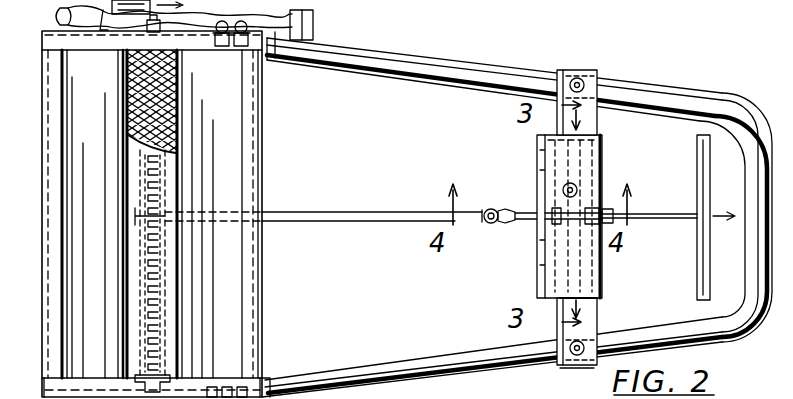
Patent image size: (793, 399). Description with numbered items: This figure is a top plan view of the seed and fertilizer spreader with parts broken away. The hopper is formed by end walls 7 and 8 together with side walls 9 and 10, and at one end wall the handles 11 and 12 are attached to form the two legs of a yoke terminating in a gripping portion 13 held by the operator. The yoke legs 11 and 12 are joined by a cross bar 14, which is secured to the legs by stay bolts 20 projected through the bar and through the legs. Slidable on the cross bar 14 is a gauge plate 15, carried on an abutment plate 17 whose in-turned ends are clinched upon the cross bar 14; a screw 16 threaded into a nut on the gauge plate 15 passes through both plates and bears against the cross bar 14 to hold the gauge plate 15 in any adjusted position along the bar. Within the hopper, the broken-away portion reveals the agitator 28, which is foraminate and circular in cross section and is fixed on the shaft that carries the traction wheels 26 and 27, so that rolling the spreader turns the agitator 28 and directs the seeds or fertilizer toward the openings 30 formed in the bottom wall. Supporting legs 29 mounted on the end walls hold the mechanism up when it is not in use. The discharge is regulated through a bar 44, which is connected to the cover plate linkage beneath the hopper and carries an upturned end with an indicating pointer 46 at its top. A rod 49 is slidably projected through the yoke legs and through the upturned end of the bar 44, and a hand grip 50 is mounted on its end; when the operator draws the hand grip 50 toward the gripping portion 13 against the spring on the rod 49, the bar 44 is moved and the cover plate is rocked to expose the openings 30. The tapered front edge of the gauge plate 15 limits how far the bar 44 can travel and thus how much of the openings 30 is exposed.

The end wall 7 is at (91, 385).
The end wall 8 is at (139, 16).
The side wall 9 is at (250, 268).
The side wall 10 is at (48, 225).
The handle 11 is at (435, 58).
The handle 12 is at (364, 373).
The gripping portion 13 is at (770, 241).
The cross bar 14 is at (594, 312).
The gauge plate 15 is at (540, 140).
The screw 16 is at (577, 189).
The abutment plate 17 is at (587, 139).
The stay bolts 20 is at (582, 78).
The traction wheel 26 is at (58, 12).
The traction wheel 27 is at (265, 396).
The agitator 28 is at (177, 95).
The supporting legs 29 is at (315, 22).
The openings 30 is at (168, 330).
The bar 44 is at (374, 211).
The indicating pointer 46 is at (511, 223).
The rod 49 is at (658, 213).
The hand grip 50 is at (707, 170).